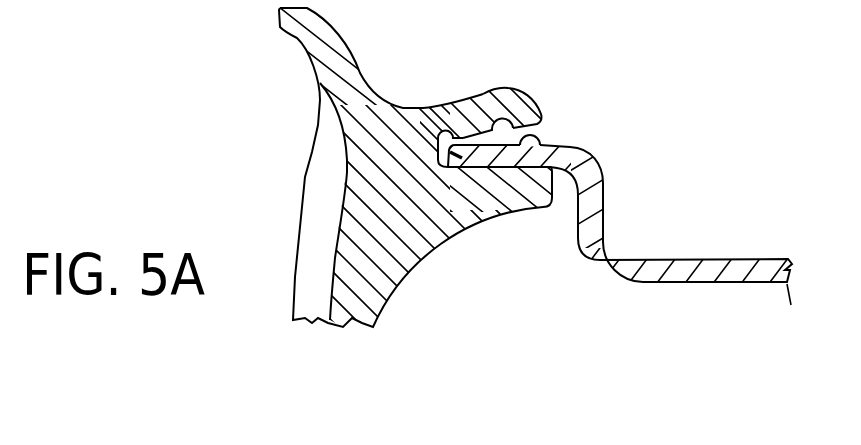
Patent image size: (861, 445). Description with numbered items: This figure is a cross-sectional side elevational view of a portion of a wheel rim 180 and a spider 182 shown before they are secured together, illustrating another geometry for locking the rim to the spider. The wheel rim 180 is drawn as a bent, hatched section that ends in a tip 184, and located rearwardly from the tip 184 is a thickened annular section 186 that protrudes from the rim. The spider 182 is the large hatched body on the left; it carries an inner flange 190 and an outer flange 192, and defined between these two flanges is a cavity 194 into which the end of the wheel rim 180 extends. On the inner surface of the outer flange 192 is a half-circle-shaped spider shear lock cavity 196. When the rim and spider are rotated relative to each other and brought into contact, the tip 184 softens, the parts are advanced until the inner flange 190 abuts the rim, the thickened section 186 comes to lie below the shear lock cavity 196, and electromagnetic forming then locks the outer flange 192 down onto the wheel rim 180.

The wheel rim 180 is at (716, 295).
The spider 182 is at (291, 175).
The tip 184 is at (455, 160).
The thickened annular section 186 is at (531, 141).
The inner flange 190 is at (527, 192).
The outer flange 192 is at (490, 103).
The cavity 194 is at (453, 133).
The spider shear lock cavity 196 is at (516, 120).